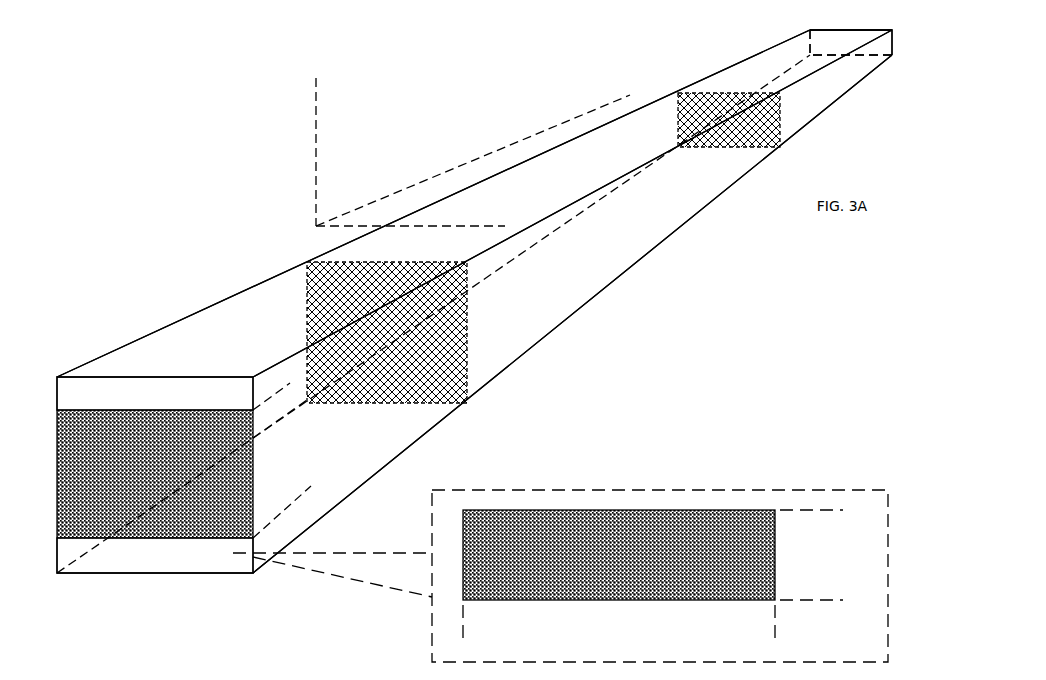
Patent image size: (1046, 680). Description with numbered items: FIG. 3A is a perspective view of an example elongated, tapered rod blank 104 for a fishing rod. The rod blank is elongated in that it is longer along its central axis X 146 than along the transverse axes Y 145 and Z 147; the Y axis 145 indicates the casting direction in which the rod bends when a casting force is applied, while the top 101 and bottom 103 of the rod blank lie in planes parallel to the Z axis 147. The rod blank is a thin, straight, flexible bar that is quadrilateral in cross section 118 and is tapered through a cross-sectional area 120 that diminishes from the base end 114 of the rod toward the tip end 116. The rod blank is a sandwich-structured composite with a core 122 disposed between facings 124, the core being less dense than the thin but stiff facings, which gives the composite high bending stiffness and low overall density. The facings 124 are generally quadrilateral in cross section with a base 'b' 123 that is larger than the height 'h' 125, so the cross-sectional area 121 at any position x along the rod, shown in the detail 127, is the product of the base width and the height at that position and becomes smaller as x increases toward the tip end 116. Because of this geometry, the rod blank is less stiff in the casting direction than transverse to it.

The elongated, tapered rod blank 104 is at (183, 156).
The base end 114 is at (88, 341).
The tip end 116 is at (773, 37).
The top 101 is at (474, 203).
The bottom 103 is at (572, 314).
The quadrilateral in cross section 118 is at (378, 407).
The cross-sectional area diminishing from base end toward tip end 120 is at (473, 328).
The cross-sectional area 121 is at (619, 555).
The core 122 is at (155, 474).
The facings 124 is at (155, 475).
The base 'b' 123 is at (468, 623).
The height 'h' 125 is at (814, 515).
The cross-section inset 127 is at (560, 576).
The Y axis 145 is at (338, 149).
The X axis 146 is at (473, 160).
The Z axis 147 is at (413, 217).